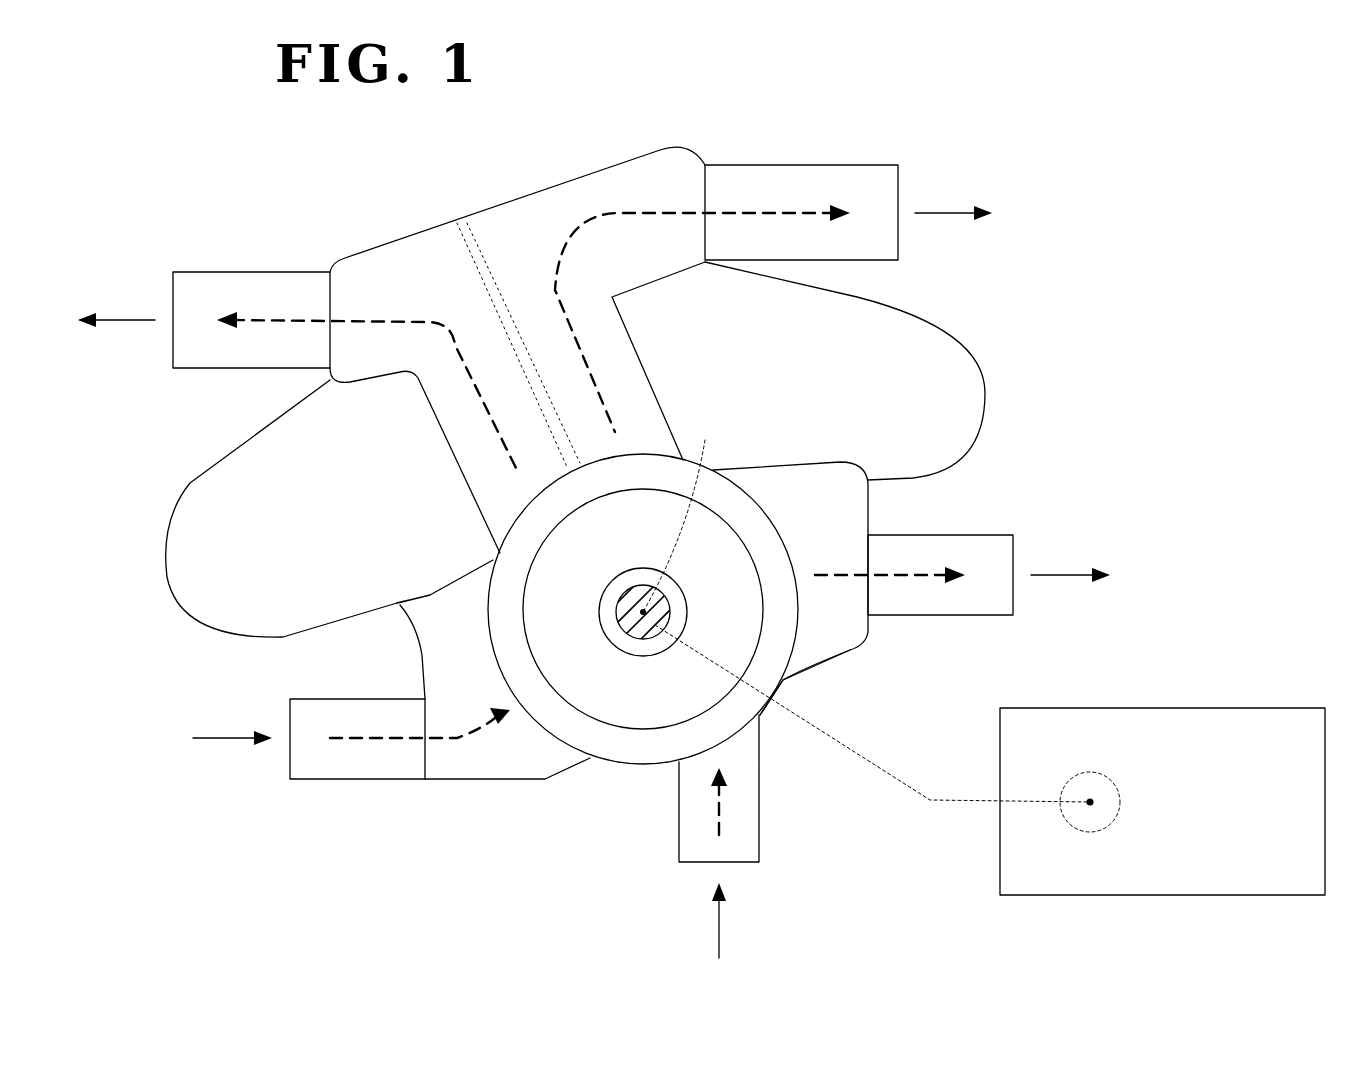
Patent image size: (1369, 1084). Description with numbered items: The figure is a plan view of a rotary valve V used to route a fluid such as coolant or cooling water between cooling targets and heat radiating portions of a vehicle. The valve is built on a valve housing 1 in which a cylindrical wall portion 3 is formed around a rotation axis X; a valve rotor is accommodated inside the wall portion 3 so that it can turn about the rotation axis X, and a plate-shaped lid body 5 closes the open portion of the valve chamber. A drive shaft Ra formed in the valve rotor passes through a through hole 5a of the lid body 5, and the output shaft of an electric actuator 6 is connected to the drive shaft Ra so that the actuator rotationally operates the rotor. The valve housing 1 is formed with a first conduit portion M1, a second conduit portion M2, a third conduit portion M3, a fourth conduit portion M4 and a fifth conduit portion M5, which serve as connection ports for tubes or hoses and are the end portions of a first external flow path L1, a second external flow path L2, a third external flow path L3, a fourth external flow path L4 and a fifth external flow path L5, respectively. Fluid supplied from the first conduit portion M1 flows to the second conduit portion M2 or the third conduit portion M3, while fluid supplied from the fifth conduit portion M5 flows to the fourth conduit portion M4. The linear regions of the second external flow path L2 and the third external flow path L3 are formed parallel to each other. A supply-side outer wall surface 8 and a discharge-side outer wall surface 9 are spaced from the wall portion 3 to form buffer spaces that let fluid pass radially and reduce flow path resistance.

The rotary valve V is at (243, 165).
The valve housing 1 is at (645, 368).
The wall portion 3 is at (635, 770).
The lid body 5 is at (553, 588).
The through hole 5a is at (617, 637).
The drive shaft Ra is at (657, 643).
The rotation axis X is at (679, 515).
The electric actuator 6 is at (1180, 708).
The supply-side outer wall surface 8 is at (410, 648).
The discharge-side outer wall surface 9 is at (845, 655).
The first conduit portion M1 is at (357, 780).
The second conduit portion M2 is at (255, 272).
The third conduit portion M3 is at (795, 165).
The fourth conduit portion M4 is at (948, 617).
The fifth conduit portion M5 is at (765, 825).
The first external flow path L1 is at (455, 742).
The second external flow path L2 is at (385, 318).
The third external flow path L3 is at (648, 205).
The fourth external flow path L4 is at (905, 575).
The fifth external flow path L5 is at (728, 803).